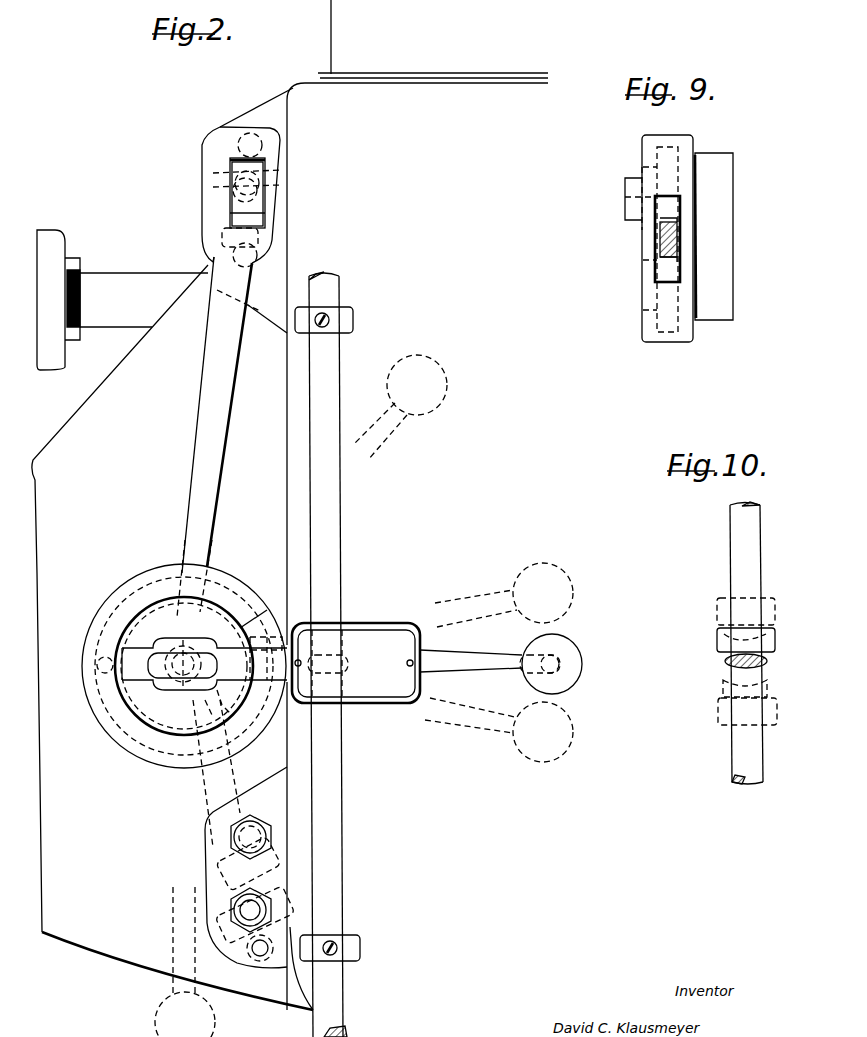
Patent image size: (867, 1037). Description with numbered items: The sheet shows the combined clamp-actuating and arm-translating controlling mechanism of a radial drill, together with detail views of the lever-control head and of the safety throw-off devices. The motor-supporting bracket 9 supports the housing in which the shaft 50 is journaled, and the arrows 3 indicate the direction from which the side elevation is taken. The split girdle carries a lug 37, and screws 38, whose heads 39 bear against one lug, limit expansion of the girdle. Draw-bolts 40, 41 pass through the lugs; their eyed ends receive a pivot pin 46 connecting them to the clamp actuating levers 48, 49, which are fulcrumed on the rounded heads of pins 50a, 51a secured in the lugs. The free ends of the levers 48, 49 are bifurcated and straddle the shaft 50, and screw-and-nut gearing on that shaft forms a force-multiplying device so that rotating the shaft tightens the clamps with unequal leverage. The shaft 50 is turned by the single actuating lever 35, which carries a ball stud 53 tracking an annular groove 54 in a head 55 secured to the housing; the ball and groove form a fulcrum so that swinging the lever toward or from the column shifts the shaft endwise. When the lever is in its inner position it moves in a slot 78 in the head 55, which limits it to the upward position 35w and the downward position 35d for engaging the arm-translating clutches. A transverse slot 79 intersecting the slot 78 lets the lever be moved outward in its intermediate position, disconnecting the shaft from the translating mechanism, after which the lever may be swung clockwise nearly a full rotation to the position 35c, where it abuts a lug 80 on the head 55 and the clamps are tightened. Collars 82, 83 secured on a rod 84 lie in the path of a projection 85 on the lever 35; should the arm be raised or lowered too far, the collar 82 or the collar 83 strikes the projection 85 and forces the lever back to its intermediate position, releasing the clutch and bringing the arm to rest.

In FIG. 2, the arrows 3 is at (96, 160).
In FIG. 2, the motor-supporting bracket 9 is at (290, 505).
In FIG. 2, the actuating lever 35 is at (495, 656).
In FIG. 9, the actuating lever 35 is at (662, 242).
In FIG. 2, the clamping position of lever 35c is at (387, 437).
In FIG. 2, the upward lever position 35w is at (573, 600).
In FIG. 2, the downward lever position 35d is at (573, 740).
In FIG. 2, the lug 37 is at (257, 568).
In FIG. 2, the screws 38 is at (262, 257).
In FIG. 2, the screw heads 39 is at (272, 840).
In FIG. 2, the draw-bolt 40 is at (265, 210).
In FIG. 2, the draw-bolt 41 is at (273, 908).
In FIG. 2, the pivot pin 46 is at (263, 178).
In FIG. 2, the clamp actuating lever 48 is at (197, 488).
In FIG. 2, the clamp actuating lever 49 is at (203, 803).
In FIG. 2, the shaft 50 is at (160, 673).
In FIG. 2, the pin 50a is at (262, 147).
In FIG. 2, the pin 51a is at (255, 960).
In FIG. 2, the ball stud 53 is at (92, 692).
In FIG. 2, the annular groove 54 is at (100, 637).
In FIG. 9, the annular groove 54 is at (660, 323).
In FIG. 2, the head 55 is at (138, 578).
In FIG. 9, the head 55 is at (663, 337).
In FIG. 2, the slot 78 is at (273, 637).
In FIG. 9, the slot 78 is at (655, 190).
In FIG. 2, the transverse slot 79 is at (253, 647).
In FIG. 9, the transverse slot 79 is at (653, 225).
In FIG. 2, the lug 80 is at (267, 617).
In FIG. 9, the lug 80 is at (632, 177).
In FIG. 2, the collar 82 is at (355, 322).
In FIG. 10, the collar 82 is at (775, 613).
In FIG. 2, the collar 83 is at (360, 947).
In FIG. 10, the collar 83 is at (777, 718).
In FIG. 10, the rod 84 is at (757, 557).
In FIG. 2, the projection 85 is at (348, 664).
In FIG. 10, the projection 85 is at (767, 662).